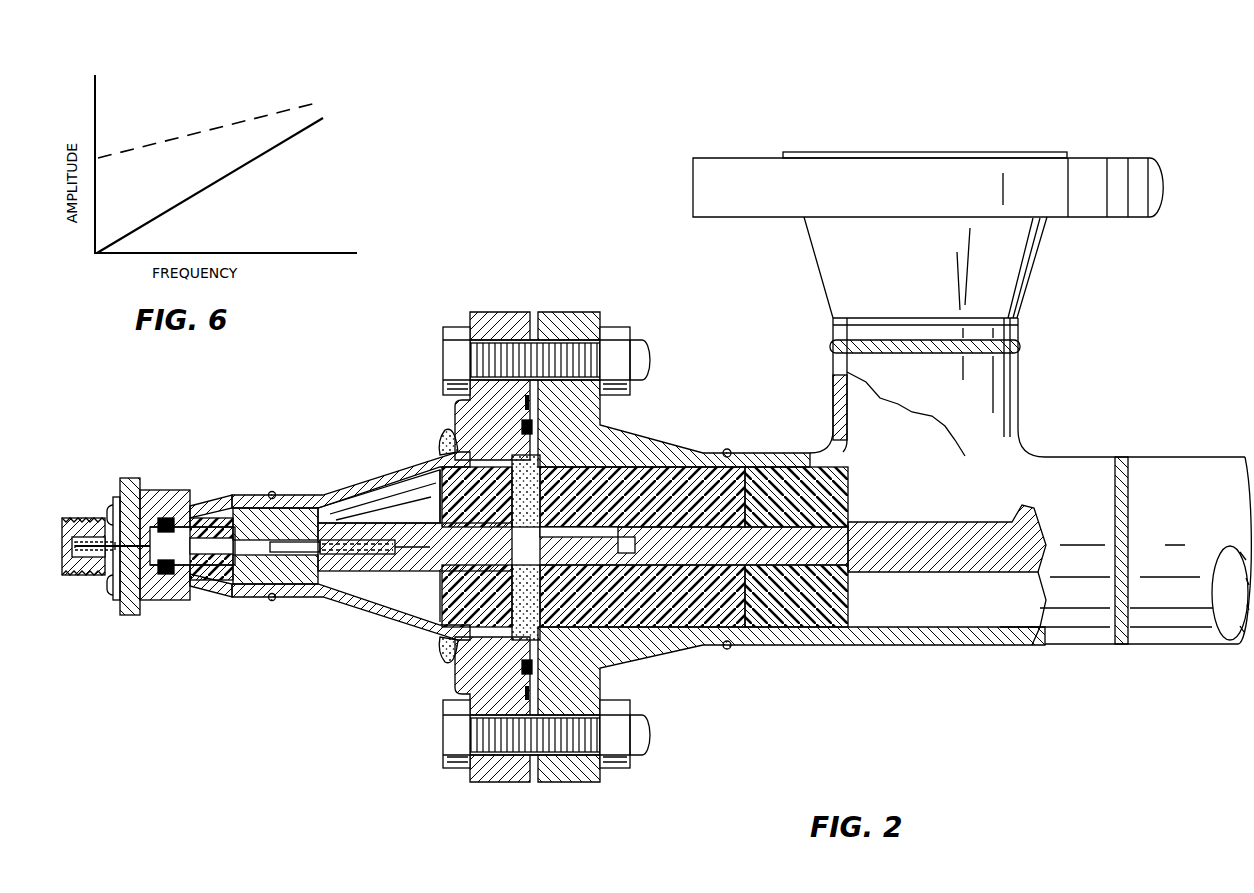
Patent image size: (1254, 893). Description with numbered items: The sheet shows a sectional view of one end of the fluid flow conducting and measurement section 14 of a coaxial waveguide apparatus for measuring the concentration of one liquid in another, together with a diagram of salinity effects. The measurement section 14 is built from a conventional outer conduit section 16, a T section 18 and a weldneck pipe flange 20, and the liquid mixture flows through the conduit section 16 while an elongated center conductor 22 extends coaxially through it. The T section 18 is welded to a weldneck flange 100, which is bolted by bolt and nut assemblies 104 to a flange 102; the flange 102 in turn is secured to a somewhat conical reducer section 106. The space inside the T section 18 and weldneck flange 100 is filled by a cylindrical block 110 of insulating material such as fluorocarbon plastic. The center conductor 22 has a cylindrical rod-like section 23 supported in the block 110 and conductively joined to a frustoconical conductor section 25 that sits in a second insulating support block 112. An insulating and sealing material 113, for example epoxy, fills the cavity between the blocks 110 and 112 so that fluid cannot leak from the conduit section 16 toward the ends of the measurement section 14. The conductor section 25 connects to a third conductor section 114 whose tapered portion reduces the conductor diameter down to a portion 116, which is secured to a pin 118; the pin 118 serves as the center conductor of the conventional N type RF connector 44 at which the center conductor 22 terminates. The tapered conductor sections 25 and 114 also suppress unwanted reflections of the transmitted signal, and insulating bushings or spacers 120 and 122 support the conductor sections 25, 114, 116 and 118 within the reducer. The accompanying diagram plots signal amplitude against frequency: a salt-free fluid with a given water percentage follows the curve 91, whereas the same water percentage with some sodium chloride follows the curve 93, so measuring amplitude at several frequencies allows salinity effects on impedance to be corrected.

In FIG. 2, the fluid flow conducting and measurement section 14 is at (1190, 420).
In FIG. 2, the outer conduit section 16 is at (1152, 645).
In FIG. 2, the T section 18 is at (1021, 399).
In FIG. 2, the weldneck pipe flange 20 is at (1035, 288).
In FIG. 2, the center conductor 22 is at (985, 572).
In FIG. 2, the rod-like section 23 is at (908, 556).
In FIG. 2, the frustoconical conductor section 25 is at (392, 520).
In FIG. 2, the N type RF connector 44 is at (101, 580).
In FIG. 6, the salt-free signal characteristic curve 91 is at (277, 145).
In FIG. 6, the saline signal characteristic curve 93 is at (270, 113).
In FIG. 2, the weldneck flange 100 is at (565, 312).
In FIG. 2, the flange 102 is at (497, 312).
In FIG. 2, the bolt and nut assembly 104 is at (445, 358).
In FIG. 2, the reducer section 106 is at (330, 601).
In FIG. 2, the cylindrical block 110 is at (851, 486).
In FIG. 2, the second support block 112 is at (440, 597).
In FIG. 2, the insulating and sealing material 113 is at (540, 478).
In FIG. 2, the third conductor section 114 is at (213, 572).
In FIG. 2, the reduced-diameter portion 116 is at (165, 574).
In FIG. 2, the pin 118 is at (104, 518).
In FIG. 2, the insulating bushing or spacer 120 is at (286, 586).
In FIG. 2, the insulating bushing or spacer 122 is at (158, 520).